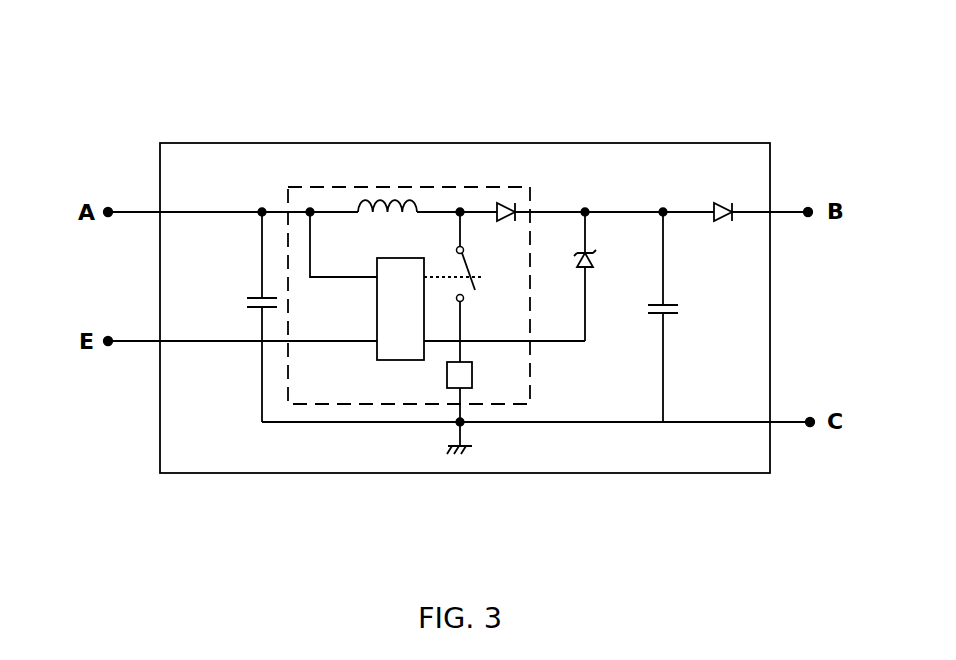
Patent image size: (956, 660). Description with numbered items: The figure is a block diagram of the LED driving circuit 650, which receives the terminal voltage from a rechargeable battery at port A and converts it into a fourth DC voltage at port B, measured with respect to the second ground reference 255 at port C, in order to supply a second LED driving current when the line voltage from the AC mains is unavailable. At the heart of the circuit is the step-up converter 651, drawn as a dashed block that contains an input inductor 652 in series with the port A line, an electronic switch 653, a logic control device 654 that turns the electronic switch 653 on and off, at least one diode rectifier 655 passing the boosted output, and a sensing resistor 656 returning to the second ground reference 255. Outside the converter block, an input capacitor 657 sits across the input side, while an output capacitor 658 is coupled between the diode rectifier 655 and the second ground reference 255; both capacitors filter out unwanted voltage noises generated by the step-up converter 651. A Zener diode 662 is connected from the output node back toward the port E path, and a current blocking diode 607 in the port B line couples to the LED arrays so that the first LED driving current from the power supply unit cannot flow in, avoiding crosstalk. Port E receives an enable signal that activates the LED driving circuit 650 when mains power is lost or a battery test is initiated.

The LED driving circuit 650 is at (455, 141).
The step-up converter 651 is at (369, 408).
The input inductor 652 is at (385, 194).
The electronic switch 653 is at (470, 291).
The logic control device 654 is at (374, 257).
The diode rectifier 655 is at (507, 204).
The sensing resistor 656 is at (475, 389).
The input capacitor 657 is at (258, 308).
The output capacitor 658 is at (677, 304).
The Zener diode 662 is at (591, 250).
The current blocking diode 607 is at (722, 204).
The second ground reference 255 is at (449, 453).